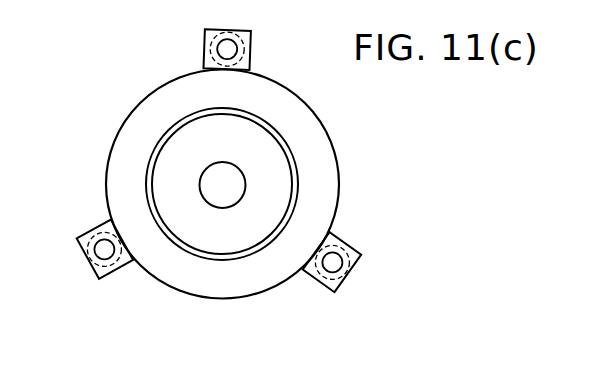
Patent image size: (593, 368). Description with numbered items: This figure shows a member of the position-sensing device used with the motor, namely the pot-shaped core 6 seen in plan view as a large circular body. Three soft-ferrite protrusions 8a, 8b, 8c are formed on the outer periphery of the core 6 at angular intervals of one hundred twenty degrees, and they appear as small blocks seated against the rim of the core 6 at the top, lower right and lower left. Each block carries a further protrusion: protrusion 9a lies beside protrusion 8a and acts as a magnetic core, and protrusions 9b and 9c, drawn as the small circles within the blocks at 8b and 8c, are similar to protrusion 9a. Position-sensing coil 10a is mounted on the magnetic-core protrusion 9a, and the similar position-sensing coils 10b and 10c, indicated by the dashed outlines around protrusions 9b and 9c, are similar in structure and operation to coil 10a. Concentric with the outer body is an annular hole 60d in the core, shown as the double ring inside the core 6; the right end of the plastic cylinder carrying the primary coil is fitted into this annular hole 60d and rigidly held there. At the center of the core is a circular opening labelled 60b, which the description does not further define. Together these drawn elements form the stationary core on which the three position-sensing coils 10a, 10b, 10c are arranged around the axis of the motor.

The pot-shaped core 6 is at (339, 172).
The protrusion 8a is at (251, 64).
The protrusion 8b is at (330, 236).
The protrusion 8c is at (105, 279).
The protrusion 9a is at (217, 50).
The protrusion 9b is at (338, 260).
The protrusion 9c is at (94, 260).
The position-sensing coil 10a is at (246, 39).
The position-sensing coil 10b is at (336, 290).
The position-sensing coil 10c is at (118, 268).
The central bore 60b is at (210, 206).
The annular hole 60d is at (258, 250).